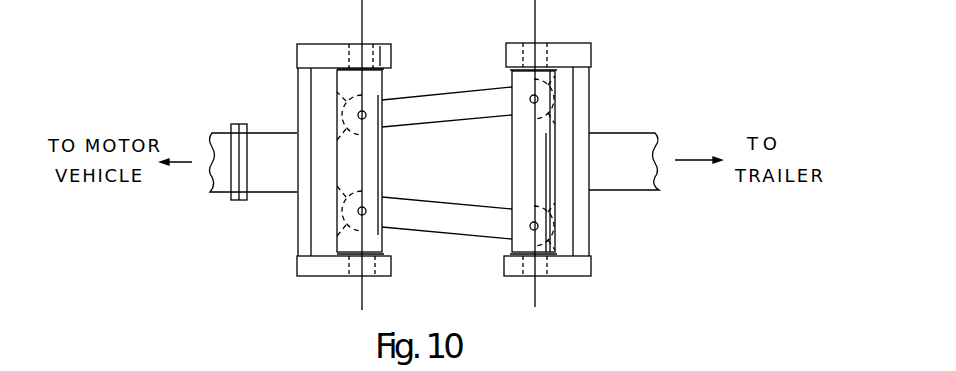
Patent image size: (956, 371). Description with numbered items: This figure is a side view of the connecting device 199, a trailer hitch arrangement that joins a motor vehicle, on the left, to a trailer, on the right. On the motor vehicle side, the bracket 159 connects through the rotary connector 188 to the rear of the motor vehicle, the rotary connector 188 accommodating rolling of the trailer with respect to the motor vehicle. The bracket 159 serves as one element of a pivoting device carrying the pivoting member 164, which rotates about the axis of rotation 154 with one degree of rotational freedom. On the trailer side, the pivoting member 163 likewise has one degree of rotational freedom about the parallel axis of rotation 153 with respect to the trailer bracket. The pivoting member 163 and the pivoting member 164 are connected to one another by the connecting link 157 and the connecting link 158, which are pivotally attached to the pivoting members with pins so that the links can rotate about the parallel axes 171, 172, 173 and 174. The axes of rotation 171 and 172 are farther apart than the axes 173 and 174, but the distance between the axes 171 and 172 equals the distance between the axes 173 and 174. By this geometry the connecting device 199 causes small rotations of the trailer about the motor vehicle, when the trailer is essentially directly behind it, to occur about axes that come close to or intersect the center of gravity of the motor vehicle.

The axis of rotation 153 is at (535, 17).
The axis of rotation 154 is at (363, 22).
The connecting link 157 is at (447, 103).
The connecting link 158 is at (465, 213).
The bracket 159 is at (315, 52).
The pivoting member 163 is at (540, 137).
The pivoting member 164 is at (377, 157).
The axis of rotation 171 is at (538, 99).
The axis of rotation 172 is at (358, 114).
The axis of rotation 173 is at (538, 227).
The axis of rotation 174 is at (358, 213).
The rotary connector 188 is at (236, 118).
The connecting device 199 is at (624, 296).